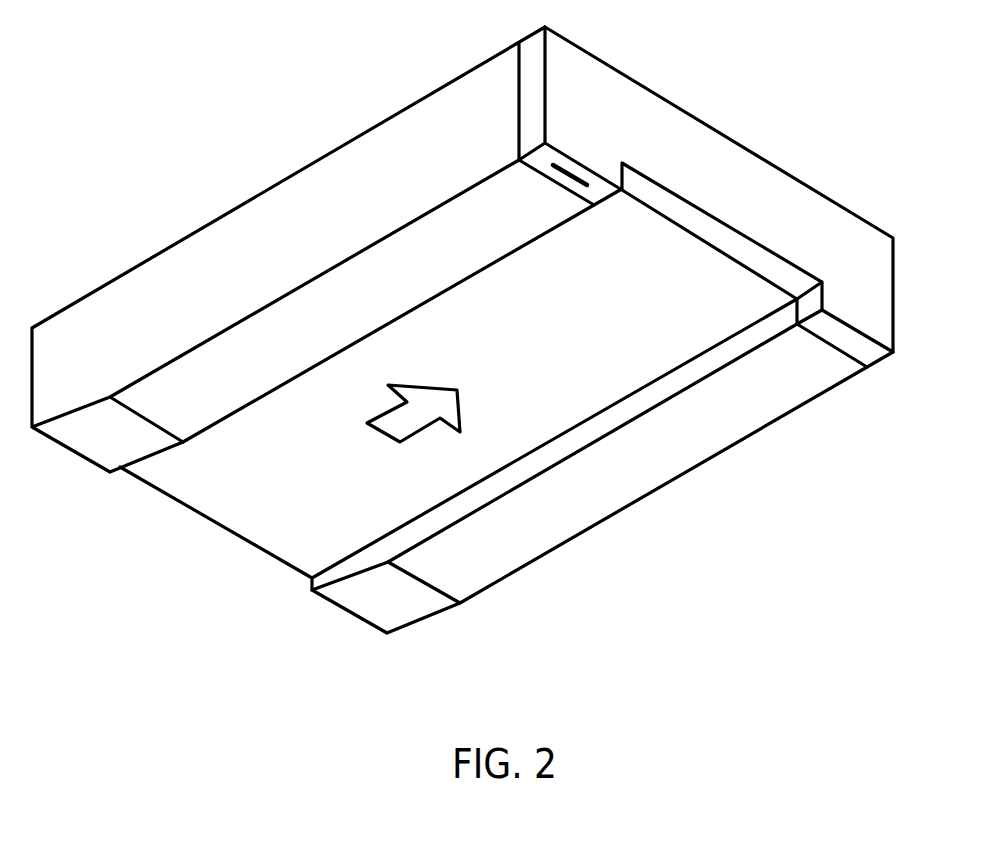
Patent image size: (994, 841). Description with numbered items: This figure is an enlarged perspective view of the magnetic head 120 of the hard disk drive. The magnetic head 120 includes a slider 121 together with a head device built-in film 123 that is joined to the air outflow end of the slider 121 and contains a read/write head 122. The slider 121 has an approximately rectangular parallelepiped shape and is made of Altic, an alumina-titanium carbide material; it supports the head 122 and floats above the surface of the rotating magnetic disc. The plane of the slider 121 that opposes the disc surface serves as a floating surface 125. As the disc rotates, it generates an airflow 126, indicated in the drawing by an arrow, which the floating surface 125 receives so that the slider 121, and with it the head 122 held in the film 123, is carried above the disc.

The magnetic head 120 is at (256, 158).
The slider 121 is at (848, 379).
The read/write head 122 is at (565, 173).
The head device built-in film 123 is at (894, 265).
The floating surface 125 is at (598, 346).
The airflow 126 is at (392, 427).